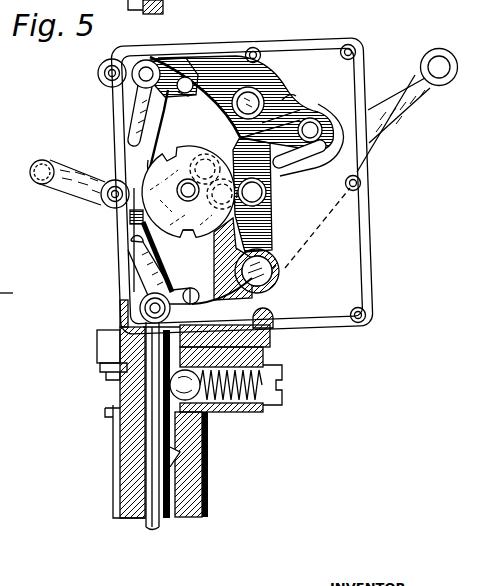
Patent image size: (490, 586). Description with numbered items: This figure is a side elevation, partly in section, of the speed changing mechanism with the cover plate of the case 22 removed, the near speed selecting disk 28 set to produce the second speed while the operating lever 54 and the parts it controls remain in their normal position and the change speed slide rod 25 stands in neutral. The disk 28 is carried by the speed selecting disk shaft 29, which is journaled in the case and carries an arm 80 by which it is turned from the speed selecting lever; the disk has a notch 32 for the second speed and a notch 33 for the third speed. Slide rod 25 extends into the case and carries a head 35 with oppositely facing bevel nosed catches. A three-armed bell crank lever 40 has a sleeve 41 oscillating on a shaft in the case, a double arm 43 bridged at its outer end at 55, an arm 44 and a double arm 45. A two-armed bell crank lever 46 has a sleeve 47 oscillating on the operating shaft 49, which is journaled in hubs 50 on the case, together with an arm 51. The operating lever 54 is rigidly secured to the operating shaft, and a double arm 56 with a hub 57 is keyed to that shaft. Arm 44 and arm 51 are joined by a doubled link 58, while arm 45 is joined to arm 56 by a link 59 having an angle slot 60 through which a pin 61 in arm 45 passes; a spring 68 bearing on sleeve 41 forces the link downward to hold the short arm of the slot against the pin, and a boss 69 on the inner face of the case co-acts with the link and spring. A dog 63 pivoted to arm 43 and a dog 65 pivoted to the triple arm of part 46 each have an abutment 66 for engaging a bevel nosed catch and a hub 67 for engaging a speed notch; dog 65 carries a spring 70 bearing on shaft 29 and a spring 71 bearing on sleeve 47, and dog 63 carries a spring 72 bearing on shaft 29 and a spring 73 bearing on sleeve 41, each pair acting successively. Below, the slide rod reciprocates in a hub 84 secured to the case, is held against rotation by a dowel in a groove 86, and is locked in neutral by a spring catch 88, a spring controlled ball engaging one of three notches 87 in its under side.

The case 22 is at (303, 45).
The change speed slide rod 25 is at (152, 522).
The speed selecting disk 28 is at (188, 191).
The speed selecting disk shaft 29 is at (185, 181).
The speed notch 32 is at (188, 234).
The speed notch 33 is at (177, 150).
The head 35 is at (132, 212).
The three-armed bell crank lever 40 is at (256, 97).
The sleeve 41 is at (239, 90).
The double arm 43 is at (218, 66).
The arm 44 is at (224, 122).
The double arm 45 is at (276, 127).
The two-armed bell crank lever 46 is at (271, 312).
The sleeve 47 is at (272, 266).
The operating shaft 49 is at (279, 275).
The hub 50 is at (15, 296).
The arm 51 is at (273, 215).
The operating lever 54 is at (387, 132).
The bridge 55 is at (160, 60).
The double arm 56 is at (234, 239).
The hub 57 is at (276, 265).
The link 58 is at (240, 157).
The link 59 is at (333, 140).
The angle slot 60 is at (298, 166).
The pin 61 is at (311, 124).
The dog 63 is at (143, 115).
The dog 65 is at (156, 273).
The abutment 66 is at (128, 140).
The hub 67 is at (185, 77).
The spring 68 is at (287, 97).
The boss 69 is at (323, 222).
The spring 70 is at (134, 233).
The spring 71 is at (224, 285).
The spring 72 is at (165, 106).
The spring 73 is at (193, 100).
The arm 80 is at (68, 180).
The hub 84 is at (114, 477).
The groove 86 is at (181, 515).
The notch 87 is at (172, 458).
The spring catch 88 is at (218, 412).